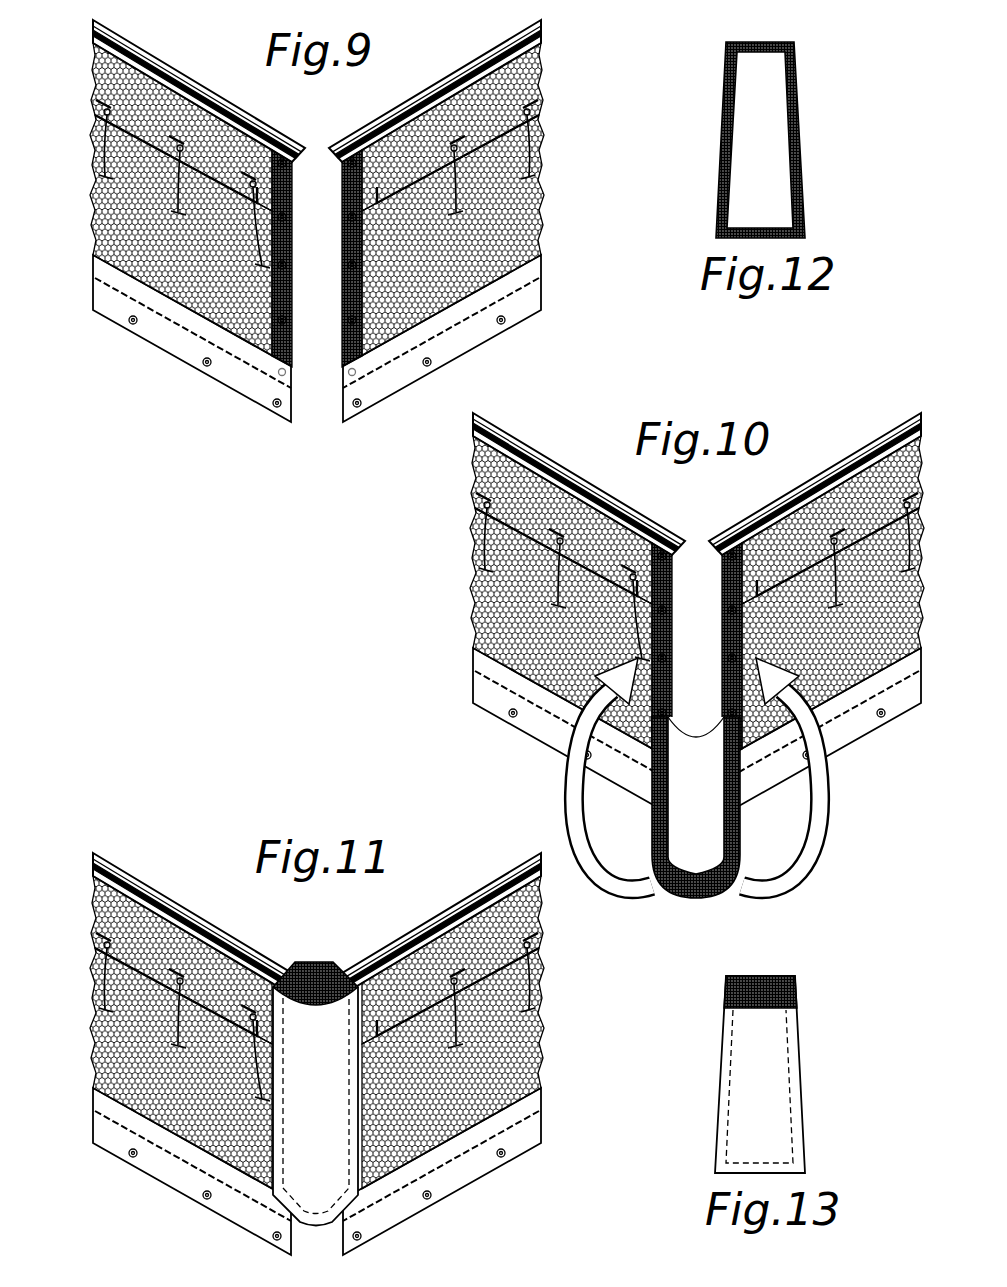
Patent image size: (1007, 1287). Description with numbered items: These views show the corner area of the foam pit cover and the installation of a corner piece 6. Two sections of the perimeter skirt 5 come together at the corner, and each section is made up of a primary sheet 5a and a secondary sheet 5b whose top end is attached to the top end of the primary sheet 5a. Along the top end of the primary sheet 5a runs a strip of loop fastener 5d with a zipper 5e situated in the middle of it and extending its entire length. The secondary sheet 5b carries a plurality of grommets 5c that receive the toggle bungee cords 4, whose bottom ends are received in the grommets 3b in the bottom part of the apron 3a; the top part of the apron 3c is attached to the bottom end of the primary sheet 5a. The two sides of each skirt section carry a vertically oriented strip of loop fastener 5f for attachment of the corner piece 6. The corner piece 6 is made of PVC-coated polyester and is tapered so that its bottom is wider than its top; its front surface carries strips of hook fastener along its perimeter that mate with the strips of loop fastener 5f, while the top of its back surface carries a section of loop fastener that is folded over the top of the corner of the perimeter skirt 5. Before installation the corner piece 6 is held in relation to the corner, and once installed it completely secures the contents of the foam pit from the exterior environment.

In FIG. 9, the bottom part of the apron 3a is at (317, 369).
In FIG. 10, the bottom part of the apron 3a is at (696, 732).
In FIG. 11, the bottom part of the apron 3a is at (317, 1175).
In FIG. 9, the grommets 3b is at (277, 407).
In FIG. 10, the grommets 3b is at (694, 753).
In FIG. 11, the grommets 3b is at (317, 1206).
In FIG. 9, the top part of the apron 3c is at (127, 288).
In FIG. 10, the top part of the apron 3c is at (696, 726).
In FIG. 11, the top part of the apron 3c is at (317, 1166).
In FIG. 9, the toggle bungee cords 4 is at (177, 212).
In FIG. 10, the toggle bungee cords 4 is at (691, 584).
In FIG. 11, the toggle bungee cords 4 is at (316, 1024).
In FIG. 9, the perimeter skirt 5 is at (317, 234).
In FIG. 10, the perimeter skirt 5 is at (689, 591).
In FIG. 11, the perimeter skirt 5 is at (317, 1032).
In FIG. 9, the primary sheet 5a is at (128, 240).
In FIG. 10, the primary sheet 5a is at (697, 628).
In FIG. 11, the primary sheet 5a is at (317, 1068).
In FIG. 9, the secondary sheet 5b is at (141, 114).
In FIG. 10, the secondary sheet 5b is at (697, 520).
In FIG. 11, the secondary sheet 5b is at (317, 960).
In FIG. 9, the grommets 5c is at (112, 113).
In FIG. 10, the grommets 5c is at (689, 536).
In FIG. 9, the strip of loop fastener 5d is at (317, 85).
In FIG. 10, the strip of loop fastener 5d is at (697, 478).
In FIG. 11, the strip of loop fastener 5d is at (317, 918).
In FIG. 9, the zipper 5e is at (218, 107).
In FIG. 10, the zipper 5e is at (697, 487).
In FIG. 11, the zipper 5e is at (317, 927).
In FIG. 9, the strip of loop fastener 5f is at (351, 340).
In FIG. 10, the strip of loop fastener 5f is at (697, 651).
In FIG. 10, the corner piece 6 is at (696, 844).
In FIG. 11, the corner piece 6 is at (315, 1060).
In FIG. 12, the corner piece 6 is at (806, 152).
In FIG. 13, the corner piece 6 is at (806, 1076).